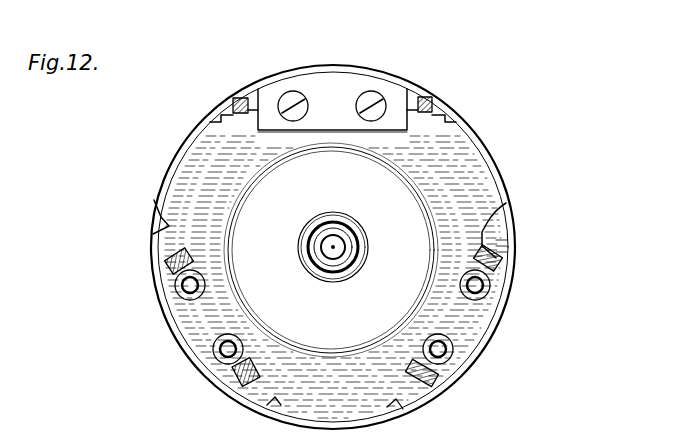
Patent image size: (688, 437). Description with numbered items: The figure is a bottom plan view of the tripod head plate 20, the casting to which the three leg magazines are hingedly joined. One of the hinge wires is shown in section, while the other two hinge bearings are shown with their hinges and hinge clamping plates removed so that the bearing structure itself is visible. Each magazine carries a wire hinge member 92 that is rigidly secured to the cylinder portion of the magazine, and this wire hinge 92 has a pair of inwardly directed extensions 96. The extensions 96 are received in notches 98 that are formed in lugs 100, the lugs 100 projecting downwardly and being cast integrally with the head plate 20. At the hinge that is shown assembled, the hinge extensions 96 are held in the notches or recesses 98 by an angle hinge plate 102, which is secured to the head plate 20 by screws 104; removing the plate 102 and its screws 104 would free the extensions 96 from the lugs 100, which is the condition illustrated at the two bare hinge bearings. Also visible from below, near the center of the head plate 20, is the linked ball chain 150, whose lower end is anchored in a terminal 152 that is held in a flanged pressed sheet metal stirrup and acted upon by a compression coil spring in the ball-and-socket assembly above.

The head plate 20 is at (468, 173).
The wire hinge member 92 is at (233, 101).
The inwardly directed extensions 96 is at (246, 98).
The notches 98 is at (496, 262).
The lugs 100 is at (170, 264).
The angle hinge plate 102 is at (339, 85).
The screws 104 is at (371, 97).
The linked ball chain 150 is at (314, 225).
The terminal 152 is at (336, 254).